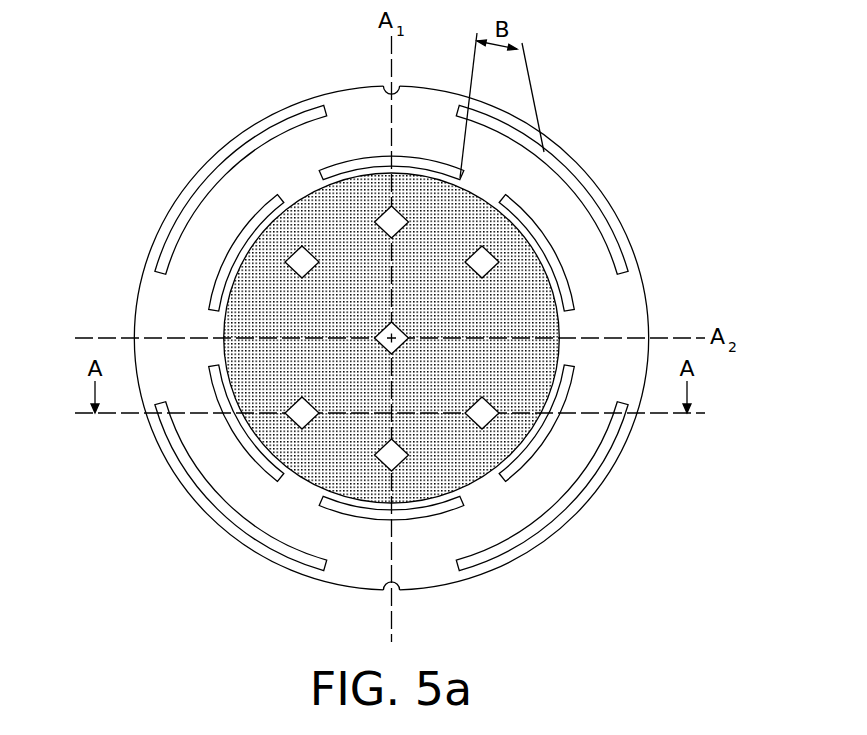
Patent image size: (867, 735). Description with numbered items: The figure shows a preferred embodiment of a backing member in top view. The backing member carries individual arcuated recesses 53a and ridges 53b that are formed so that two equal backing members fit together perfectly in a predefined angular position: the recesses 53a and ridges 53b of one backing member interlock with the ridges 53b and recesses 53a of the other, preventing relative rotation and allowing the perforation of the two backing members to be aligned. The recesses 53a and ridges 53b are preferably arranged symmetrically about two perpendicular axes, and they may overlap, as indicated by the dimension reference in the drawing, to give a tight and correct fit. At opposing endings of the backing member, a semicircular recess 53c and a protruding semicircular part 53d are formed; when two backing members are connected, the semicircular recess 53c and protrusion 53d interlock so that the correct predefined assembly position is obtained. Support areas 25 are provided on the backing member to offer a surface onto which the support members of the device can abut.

The support areas 25 is at (371, 460).
The arcuated recesses 53a is at (233, 253).
The ridges 53b is at (337, 167).
The semicircular recess 53c is at (386, 90).
The protruding semicircular part 53d is at (393, 588).